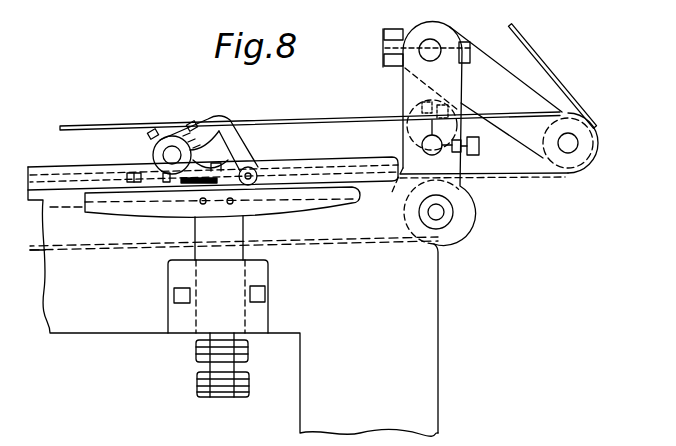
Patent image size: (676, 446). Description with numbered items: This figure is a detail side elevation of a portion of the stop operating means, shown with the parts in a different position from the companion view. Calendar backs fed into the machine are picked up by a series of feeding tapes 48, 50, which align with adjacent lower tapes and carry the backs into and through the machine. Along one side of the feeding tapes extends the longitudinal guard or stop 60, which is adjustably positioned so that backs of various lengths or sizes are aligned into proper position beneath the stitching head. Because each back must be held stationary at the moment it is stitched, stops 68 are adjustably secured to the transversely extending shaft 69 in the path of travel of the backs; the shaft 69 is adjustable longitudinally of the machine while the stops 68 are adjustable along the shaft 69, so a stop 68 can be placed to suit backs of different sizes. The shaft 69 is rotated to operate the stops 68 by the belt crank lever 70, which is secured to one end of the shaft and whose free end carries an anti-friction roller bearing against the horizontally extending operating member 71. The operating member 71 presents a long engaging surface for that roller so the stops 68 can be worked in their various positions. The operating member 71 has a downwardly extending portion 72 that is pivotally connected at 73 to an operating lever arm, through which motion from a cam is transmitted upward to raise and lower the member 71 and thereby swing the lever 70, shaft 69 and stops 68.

The feeding tape 48 is at (538, 54).
The feeding tape 50 is at (335, 118).
The guard or stop 60 is at (313, 162).
The stop 68 is at (205, 161).
The shaft 69 is at (170, 157).
The belt crank lever 70 is at (242, 124).
The operating member 71 is at (143, 207).
The downwardly extending portion 72 is at (240, 233).
The pivotal connection 73 is at (206, 393).